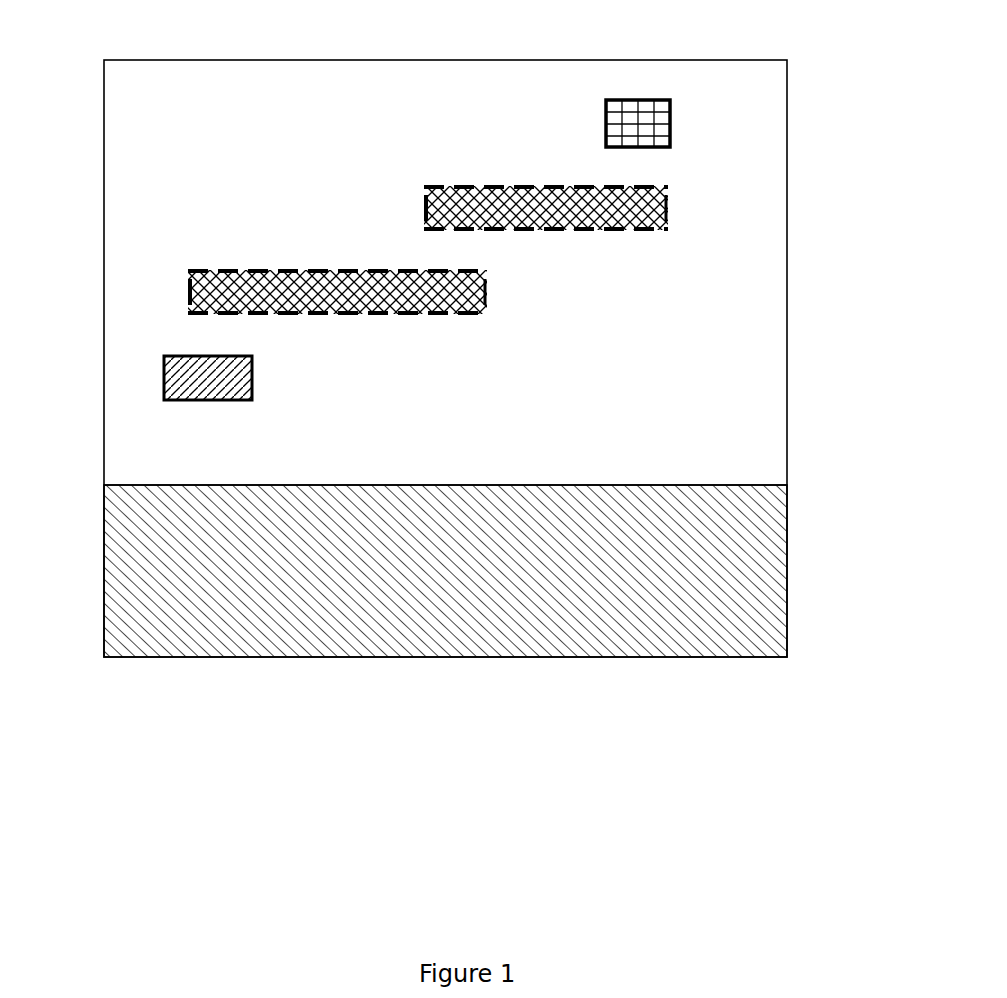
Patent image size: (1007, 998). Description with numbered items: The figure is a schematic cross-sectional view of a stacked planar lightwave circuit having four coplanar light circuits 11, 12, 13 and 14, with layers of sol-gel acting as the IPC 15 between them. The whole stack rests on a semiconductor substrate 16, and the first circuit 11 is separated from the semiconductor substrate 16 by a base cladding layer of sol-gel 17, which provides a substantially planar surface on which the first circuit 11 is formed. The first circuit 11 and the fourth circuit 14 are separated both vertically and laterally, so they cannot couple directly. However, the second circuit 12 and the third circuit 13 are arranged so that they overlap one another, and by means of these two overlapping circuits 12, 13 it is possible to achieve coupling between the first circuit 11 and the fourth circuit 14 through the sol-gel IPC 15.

The first circuit 11 is at (190, 376).
The second circuit 12 is at (195, 293).
The third circuit 13 is at (640, 207).
The fourth circuit 14 is at (660, 124).
The IPC 15 is at (662, 318).
The semiconductor substrate 16 is at (184, 561).
The base cladding layer of sol-gel 17 is at (233, 449).